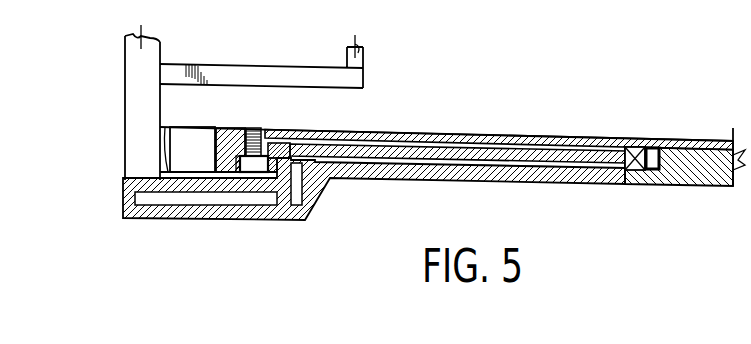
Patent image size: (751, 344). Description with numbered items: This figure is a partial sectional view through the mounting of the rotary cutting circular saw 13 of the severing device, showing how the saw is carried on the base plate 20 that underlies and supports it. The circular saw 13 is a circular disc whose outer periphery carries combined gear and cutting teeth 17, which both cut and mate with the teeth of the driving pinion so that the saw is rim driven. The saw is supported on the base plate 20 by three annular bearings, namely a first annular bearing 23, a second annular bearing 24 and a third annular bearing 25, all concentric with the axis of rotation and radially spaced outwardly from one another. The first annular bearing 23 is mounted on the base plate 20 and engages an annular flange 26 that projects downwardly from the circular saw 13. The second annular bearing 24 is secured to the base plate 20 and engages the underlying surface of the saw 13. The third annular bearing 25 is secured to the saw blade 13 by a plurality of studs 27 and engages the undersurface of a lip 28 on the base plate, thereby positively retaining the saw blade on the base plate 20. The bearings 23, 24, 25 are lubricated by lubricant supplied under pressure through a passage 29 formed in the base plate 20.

The rotary cutting circular saw 13 is at (443, 134).
The combined gear and cutting teeth 17 is at (182, 140).
The base plate 20 is at (428, 183).
The first annular bearing 23 is at (635, 149).
The second annular bearing 24 is at (318, 138).
The third annular bearing 25 is at (294, 121).
The annular flange 26 is at (648, 150).
The studs 27 is at (252, 128).
The lip 28 is at (290, 142).
The passage 29 is at (515, 166).